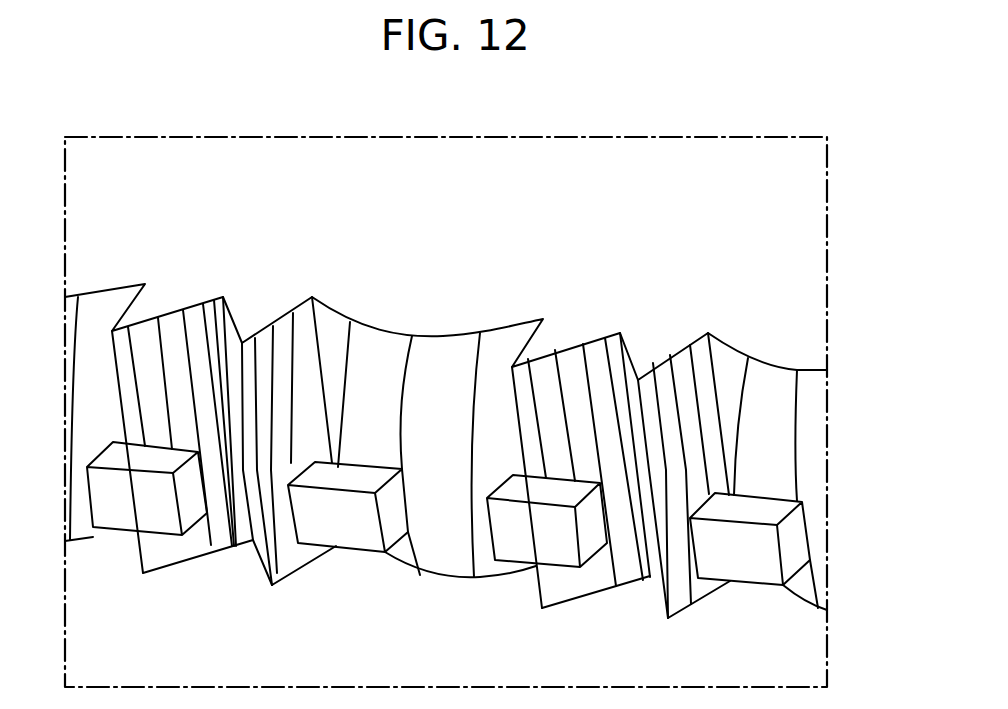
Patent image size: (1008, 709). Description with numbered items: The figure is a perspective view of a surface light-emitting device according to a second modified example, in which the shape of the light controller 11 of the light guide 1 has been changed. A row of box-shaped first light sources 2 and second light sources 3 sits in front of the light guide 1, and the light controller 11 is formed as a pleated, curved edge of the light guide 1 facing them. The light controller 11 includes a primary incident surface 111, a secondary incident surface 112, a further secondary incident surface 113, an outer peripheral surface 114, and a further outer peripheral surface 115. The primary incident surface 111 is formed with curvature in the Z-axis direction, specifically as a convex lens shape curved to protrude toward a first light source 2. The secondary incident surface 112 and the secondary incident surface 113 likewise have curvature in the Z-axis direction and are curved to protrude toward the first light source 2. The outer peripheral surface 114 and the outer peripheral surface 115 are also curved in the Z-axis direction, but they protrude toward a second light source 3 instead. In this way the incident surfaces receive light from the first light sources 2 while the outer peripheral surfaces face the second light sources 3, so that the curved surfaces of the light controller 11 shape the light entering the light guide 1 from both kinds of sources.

The light guide 1 is at (805, 228).
The light controller 11 is at (403, 576).
The primary incident surface 111 is at (465, 578).
The secondary incident surface 112 is at (297, 567).
The secondary incident surface 113 is at (538, 587).
The outer peripheral surface 114 is at (262, 555).
The outer peripheral surface 115 is at (588, 583).
The first light source 2 is at (358, 537).
The second light source 3 is at (117, 518).